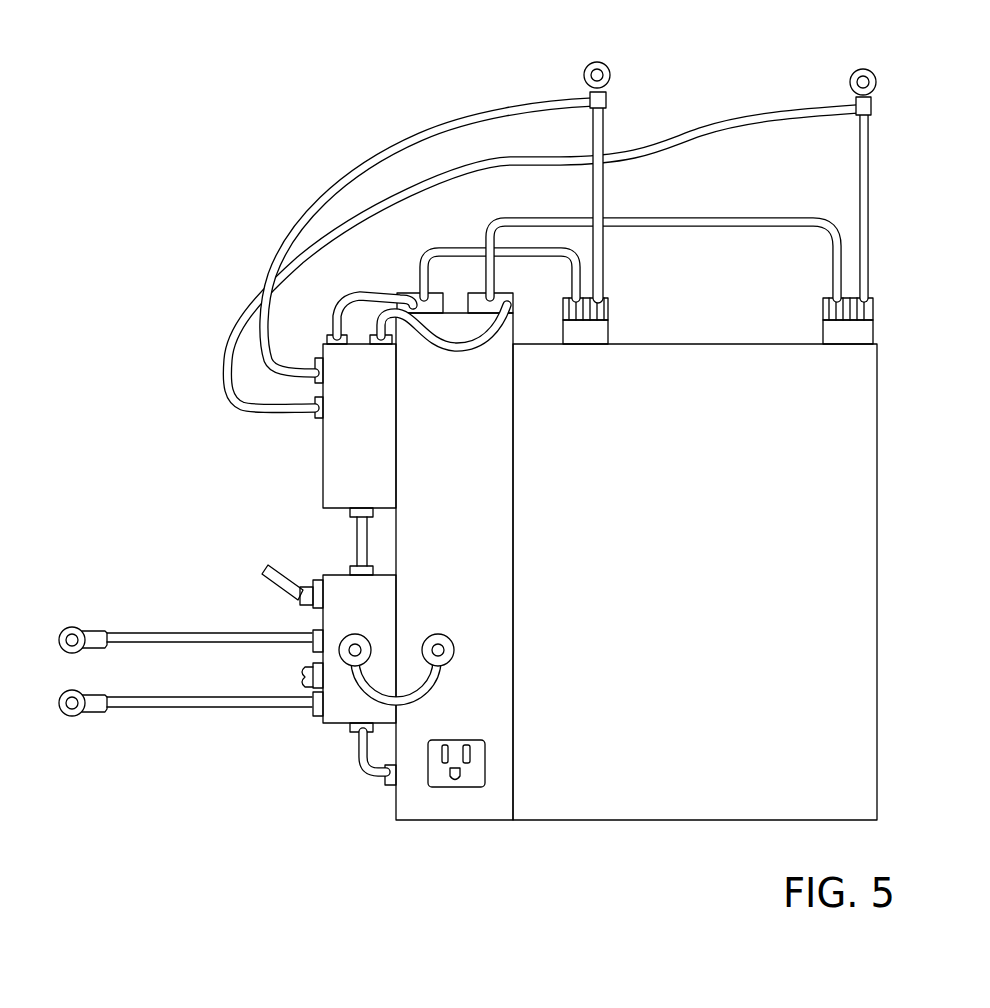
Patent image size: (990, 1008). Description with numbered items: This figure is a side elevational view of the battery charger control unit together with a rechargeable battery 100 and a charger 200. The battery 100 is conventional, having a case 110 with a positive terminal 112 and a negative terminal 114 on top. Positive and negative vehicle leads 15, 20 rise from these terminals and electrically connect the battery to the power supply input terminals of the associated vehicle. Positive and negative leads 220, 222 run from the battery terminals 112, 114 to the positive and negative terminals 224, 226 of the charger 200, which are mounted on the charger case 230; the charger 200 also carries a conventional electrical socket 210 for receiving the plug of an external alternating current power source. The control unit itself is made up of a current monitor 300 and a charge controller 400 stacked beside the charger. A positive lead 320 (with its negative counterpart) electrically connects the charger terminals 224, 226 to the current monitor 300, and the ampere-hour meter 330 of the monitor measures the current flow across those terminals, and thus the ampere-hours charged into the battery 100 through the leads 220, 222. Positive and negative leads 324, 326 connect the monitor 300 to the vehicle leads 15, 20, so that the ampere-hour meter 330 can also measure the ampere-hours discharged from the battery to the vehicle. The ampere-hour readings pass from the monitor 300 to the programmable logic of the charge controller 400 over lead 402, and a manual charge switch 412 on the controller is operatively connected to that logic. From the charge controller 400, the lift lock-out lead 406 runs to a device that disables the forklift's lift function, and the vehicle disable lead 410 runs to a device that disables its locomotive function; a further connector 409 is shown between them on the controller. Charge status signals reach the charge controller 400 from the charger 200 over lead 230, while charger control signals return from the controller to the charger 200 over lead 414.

The rechargeable battery 100 is at (512, 452).
The case 110 is at (877, 542).
The positive terminal 112 is at (867, 330).
The negative terminal 114 is at (600, 332).
The positive lead 15 is at (876, 72).
The negative lead 20 is at (607, 62).
The charger 200 is at (446, 597).
The electrical socket 210 is at (437, 783).
The positive lead 220 is at (747, 218).
The negative lead 222 is at (426, 262).
The positive terminal 224 is at (473, 300).
The negative terminal 226 is at (408, 302).
The charger case 230 is at (367, 772).
The current monitor 300 is at (290, 421).
The positive lead 320 is at (453, 352).
The positive lead 324 is at (796, 108).
The negative lead 326 is at (514, 104).
The ampere-hour meter 330 is at (333, 440).
The charge controller 400 is at (312, 658).
The lead 402 is at (355, 533).
The lift lock-out lead 406 is at (160, 637).
The connector clip 409 is at (303, 672).
The vehicle disable lead 410 is at (123, 703).
The manual charge switch 412 is at (273, 566).
The lead 414 is at (363, 688).